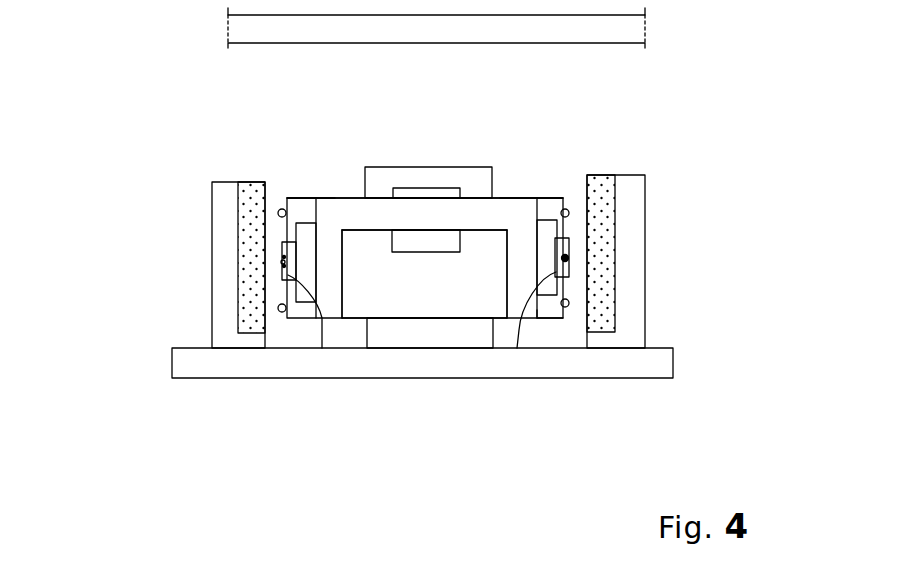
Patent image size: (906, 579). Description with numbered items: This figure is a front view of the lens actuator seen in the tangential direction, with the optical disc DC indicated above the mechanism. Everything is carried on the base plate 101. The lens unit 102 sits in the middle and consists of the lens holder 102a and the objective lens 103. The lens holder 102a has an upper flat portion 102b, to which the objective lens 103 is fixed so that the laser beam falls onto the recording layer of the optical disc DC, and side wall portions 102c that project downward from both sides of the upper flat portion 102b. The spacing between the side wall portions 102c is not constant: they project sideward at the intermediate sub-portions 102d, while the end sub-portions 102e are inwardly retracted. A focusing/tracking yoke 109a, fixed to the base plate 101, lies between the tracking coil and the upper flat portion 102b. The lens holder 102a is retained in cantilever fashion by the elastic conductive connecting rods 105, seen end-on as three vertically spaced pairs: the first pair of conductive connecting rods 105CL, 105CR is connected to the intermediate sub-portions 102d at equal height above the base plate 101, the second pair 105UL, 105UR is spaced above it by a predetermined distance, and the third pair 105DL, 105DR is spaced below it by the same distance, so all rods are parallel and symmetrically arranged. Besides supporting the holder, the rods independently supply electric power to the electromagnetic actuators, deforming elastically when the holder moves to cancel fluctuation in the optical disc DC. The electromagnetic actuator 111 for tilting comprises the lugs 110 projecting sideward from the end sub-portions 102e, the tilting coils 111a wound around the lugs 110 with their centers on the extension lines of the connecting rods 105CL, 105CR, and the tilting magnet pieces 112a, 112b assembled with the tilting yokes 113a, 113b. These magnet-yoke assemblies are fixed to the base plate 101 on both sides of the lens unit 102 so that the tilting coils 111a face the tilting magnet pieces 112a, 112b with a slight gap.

The optical disc DC is at (228, 18).
The base plate 101 is at (257, 370).
The lens unit 102 is at (638, 465).
The lens holder 102a is at (540, 314).
The upper flat portion 102b is at (373, 218).
The side wall portions 102c is at (333, 275).
The intermediate sub-portions 102d is at (307, 235).
The end sub-portions 102e is at (327, 253).
The objective lens 103 is at (435, 243).
The conductive connecting rods 105 is at (570, 175).
The conductive connecting rod 105UL is at (278, 213).
The conductive connecting rod 105CL is at (281, 263).
The conductive connecting rod 105DL is at (278, 308).
The conductive connecting rod 105UR is at (569, 213).
The conductive connecting rod 105CR is at (569, 258).
The conductive connecting rod 105DR is at (569, 303).
The focusing/tracking yoke 109a is at (427, 167).
The lugs 110 is at (322, 348).
The electromagnetic actuator 111 is at (545, 198).
The tilting coils 111a is at (310, 198).
The tilting magnet piece 112a is at (600, 188).
The tilting magnet piece 112b is at (248, 197).
The tilting yoke 113a is at (632, 202).
The tilting yoke 113b is at (215, 196).